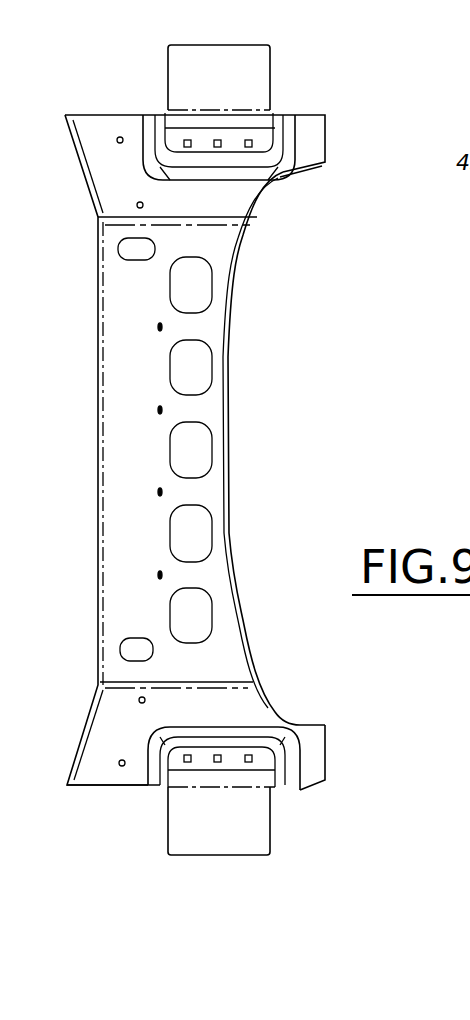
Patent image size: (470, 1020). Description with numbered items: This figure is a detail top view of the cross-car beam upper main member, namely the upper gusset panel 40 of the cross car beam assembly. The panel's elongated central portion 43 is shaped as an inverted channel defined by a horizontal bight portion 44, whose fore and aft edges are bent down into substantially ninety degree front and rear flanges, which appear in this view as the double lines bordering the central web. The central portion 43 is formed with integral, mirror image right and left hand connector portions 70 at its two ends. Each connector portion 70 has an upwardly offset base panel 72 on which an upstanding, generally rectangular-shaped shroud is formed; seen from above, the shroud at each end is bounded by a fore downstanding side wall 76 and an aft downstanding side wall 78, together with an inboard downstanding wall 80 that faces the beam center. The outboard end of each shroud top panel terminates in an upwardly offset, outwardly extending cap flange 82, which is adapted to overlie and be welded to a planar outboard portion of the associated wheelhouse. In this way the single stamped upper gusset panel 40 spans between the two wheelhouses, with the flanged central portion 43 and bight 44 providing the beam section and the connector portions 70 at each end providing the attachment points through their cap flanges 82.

The upper gusset panel 40 is at (255, 441).
The elongated central portion 43 is at (233, 390).
The horizontal bight portion 44 is at (215, 497).
The connector portion 70 is at (285, 181).
The base panel 72 is at (245, 204).
The fore side wall 76 is at (147, 137).
The aft side wall 78 is at (285, 113).
The inboard downstanding wall 80 is at (217, 737).
The cap flange 82 is at (255, 63).